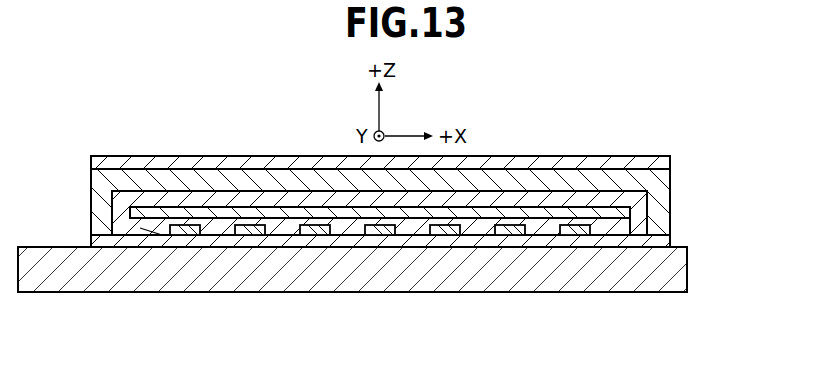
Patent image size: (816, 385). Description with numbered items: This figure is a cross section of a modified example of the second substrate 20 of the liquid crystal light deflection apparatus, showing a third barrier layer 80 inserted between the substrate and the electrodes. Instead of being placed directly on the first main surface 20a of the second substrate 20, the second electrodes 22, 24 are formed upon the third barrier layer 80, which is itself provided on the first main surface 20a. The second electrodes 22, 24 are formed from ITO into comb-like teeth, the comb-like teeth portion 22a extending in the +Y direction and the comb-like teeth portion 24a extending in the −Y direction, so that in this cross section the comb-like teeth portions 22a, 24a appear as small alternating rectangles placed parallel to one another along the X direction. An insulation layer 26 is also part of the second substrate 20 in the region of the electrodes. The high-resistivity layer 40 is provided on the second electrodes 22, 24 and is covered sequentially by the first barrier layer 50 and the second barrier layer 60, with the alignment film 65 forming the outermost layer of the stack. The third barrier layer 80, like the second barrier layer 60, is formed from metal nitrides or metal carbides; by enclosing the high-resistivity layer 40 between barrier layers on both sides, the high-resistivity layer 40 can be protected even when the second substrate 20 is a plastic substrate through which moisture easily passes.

The second substrate 20 is at (687, 281).
The first main surface 20a is at (171, 246).
The second electrode 22 is at (411, 297).
The comb-like teeth portion 22a is at (625, 322).
The second electrode 24 is at (412, 297).
The comb-like teeth portion 24a is at (559, 322).
The insulation layer 26 is at (140, 230).
The high-resistivity layer 40 is at (646, 213).
The first barrier layer 50 is at (112, 203).
The second barrier layer 60 is at (671, 182).
The alignment film 65 is at (91, 163).
The third barrier layer 80 is at (669, 241).